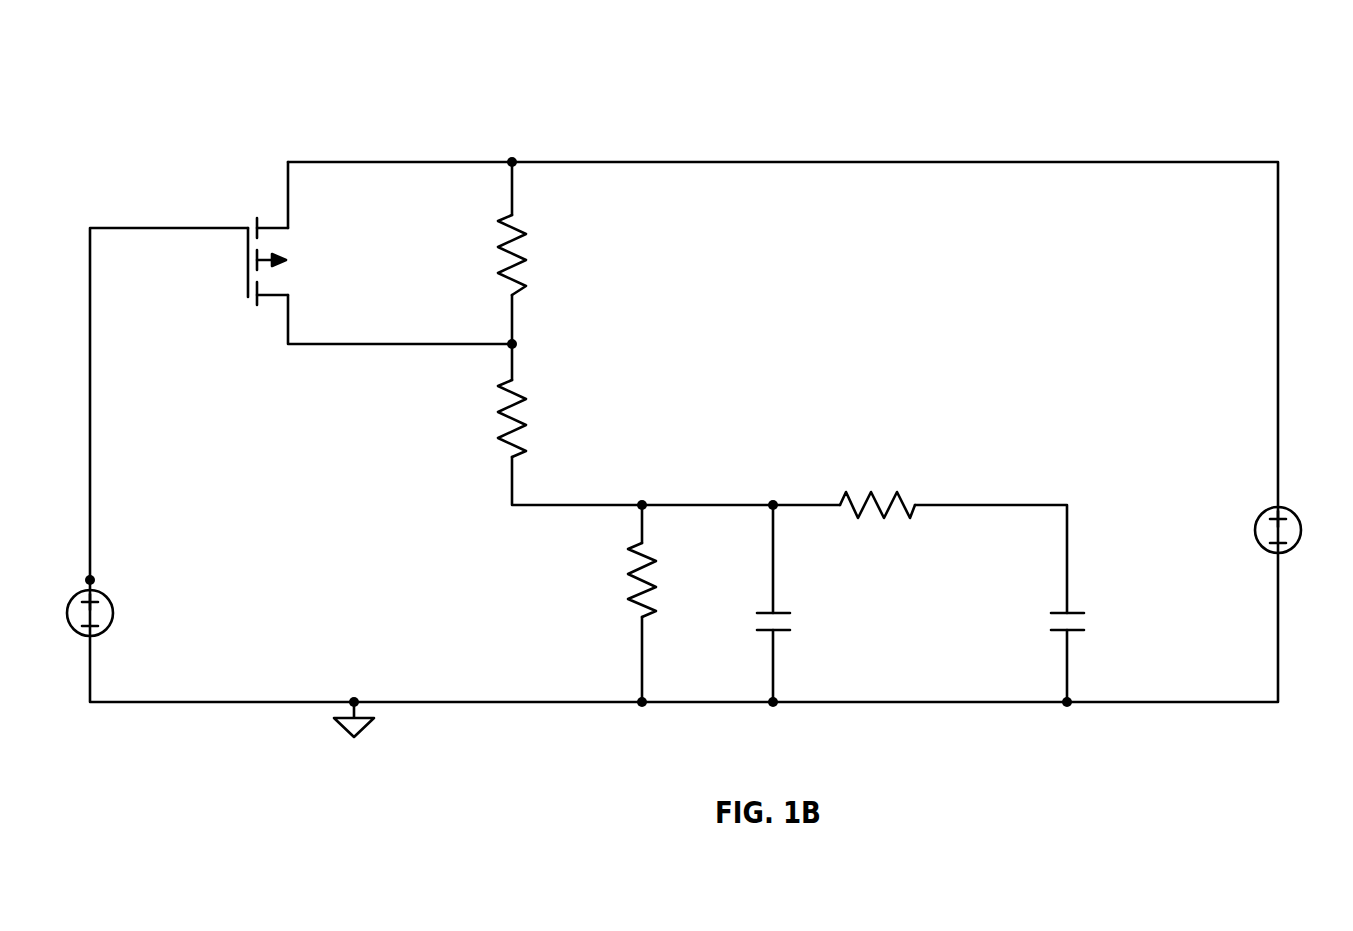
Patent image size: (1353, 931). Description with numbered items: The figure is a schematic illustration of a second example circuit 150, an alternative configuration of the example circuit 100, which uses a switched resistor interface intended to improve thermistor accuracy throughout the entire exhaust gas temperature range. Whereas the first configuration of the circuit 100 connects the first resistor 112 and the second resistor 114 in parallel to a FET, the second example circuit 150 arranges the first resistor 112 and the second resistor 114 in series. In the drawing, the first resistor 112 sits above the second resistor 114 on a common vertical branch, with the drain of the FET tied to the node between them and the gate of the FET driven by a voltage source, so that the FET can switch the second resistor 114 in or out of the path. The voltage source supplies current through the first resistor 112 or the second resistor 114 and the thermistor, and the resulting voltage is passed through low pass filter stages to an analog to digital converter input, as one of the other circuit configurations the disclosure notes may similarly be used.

The second example circuit 150 is at (253, 74).
The first resistor 112 is at (503, 248).
The second resistor 114 is at (501, 415).
The example circuit 100 is at (564, 446).